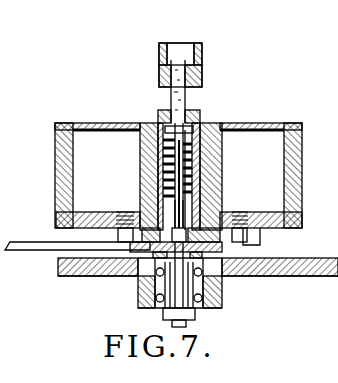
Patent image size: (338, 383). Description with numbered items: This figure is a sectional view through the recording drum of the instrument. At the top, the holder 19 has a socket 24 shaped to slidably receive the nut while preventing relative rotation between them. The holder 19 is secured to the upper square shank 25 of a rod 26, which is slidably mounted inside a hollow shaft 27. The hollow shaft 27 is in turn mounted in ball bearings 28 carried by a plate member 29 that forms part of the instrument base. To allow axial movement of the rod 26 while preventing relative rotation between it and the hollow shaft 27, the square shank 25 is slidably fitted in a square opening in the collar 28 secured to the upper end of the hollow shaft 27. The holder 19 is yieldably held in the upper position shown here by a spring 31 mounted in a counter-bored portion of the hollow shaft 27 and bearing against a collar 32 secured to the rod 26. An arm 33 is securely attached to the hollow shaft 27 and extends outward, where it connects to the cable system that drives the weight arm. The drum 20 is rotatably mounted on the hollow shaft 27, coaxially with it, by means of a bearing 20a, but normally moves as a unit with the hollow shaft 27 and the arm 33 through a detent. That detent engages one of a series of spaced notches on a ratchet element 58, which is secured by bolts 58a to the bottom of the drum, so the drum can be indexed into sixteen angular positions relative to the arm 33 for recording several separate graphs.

The holder 19 is at (192, 78).
The socket 24 is at (188, 52).
The upper square shank 25 is at (187, 103).
The ball bearings 28 is at (200, 118).
The drum 20 is at (306, 169).
The bearing 20a is at (148, 181).
The collar 32 is at (193, 129).
The spring 31 is at (196, 151).
The rod 26 is at (205, 180).
The hollow shaft 27 is at (200, 197).
The arm 33 is at (33, 247).
The plate member 29 is at (316, 277).
The ratchet element 58 is at (250, 224).
The bolts 58a is at (250, 244).